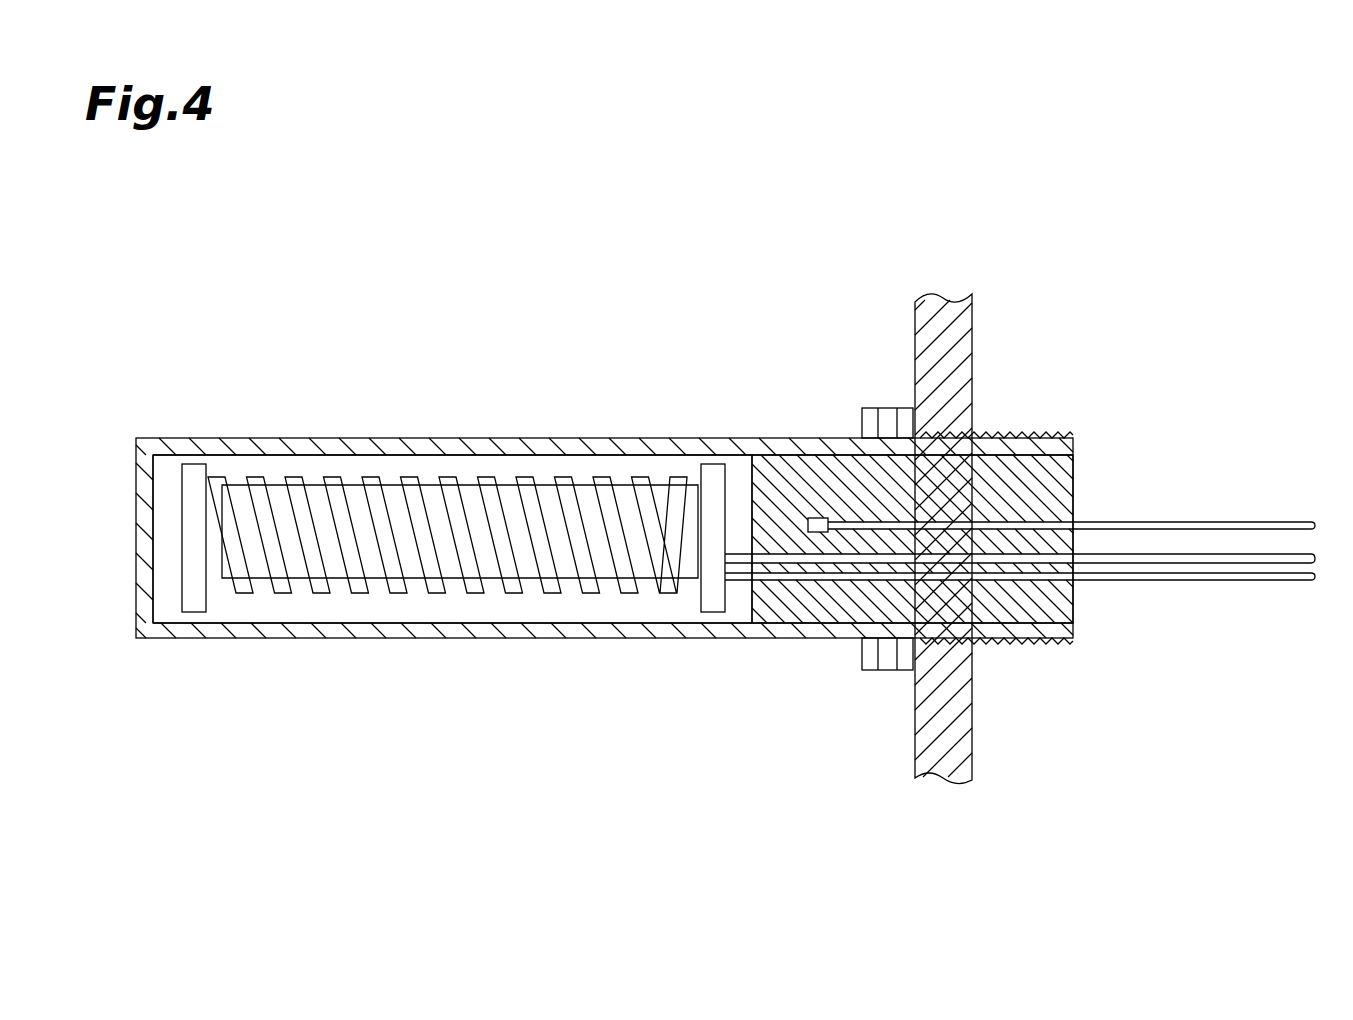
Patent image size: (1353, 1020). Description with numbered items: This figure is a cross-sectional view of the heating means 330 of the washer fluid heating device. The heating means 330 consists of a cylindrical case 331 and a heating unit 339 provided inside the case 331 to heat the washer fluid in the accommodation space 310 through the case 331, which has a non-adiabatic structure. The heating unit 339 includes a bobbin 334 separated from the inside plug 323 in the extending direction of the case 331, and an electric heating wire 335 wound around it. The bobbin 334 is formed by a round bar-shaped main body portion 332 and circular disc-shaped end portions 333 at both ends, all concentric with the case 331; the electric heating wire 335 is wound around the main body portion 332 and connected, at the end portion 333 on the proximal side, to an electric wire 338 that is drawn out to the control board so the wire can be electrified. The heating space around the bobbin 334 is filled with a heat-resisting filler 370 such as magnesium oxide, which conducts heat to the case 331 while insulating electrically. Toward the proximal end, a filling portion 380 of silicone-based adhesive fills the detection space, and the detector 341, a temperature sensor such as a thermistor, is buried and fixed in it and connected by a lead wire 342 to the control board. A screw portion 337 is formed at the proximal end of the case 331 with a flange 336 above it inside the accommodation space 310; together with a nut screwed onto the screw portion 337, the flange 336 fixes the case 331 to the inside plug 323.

The heating means 330 is at (340, 218).
The accommodation space 310 is at (512, 704).
The case 331 is at (410, 438).
The heat-resisting filler 370 is at (270, 463).
The heating unit 339 is at (705, 297).
The electric heating wire 335 is at (562, 440).
The bobbin 334 is at (745, 347).
The main body portion 332 is at (652, 440).
The end portions 333 is at (190, 464).
The filling portion 380 is at (800, 468).
The detector 341 is at (811, 533).
The lead wire 342 is at (1168, 521).
The electric wire 338 is at (1290, 563).
The inside plug 323 is at (940, 296).
The flange 336 is at (872, 675).
The screw portion 337 is at (1033, 433).